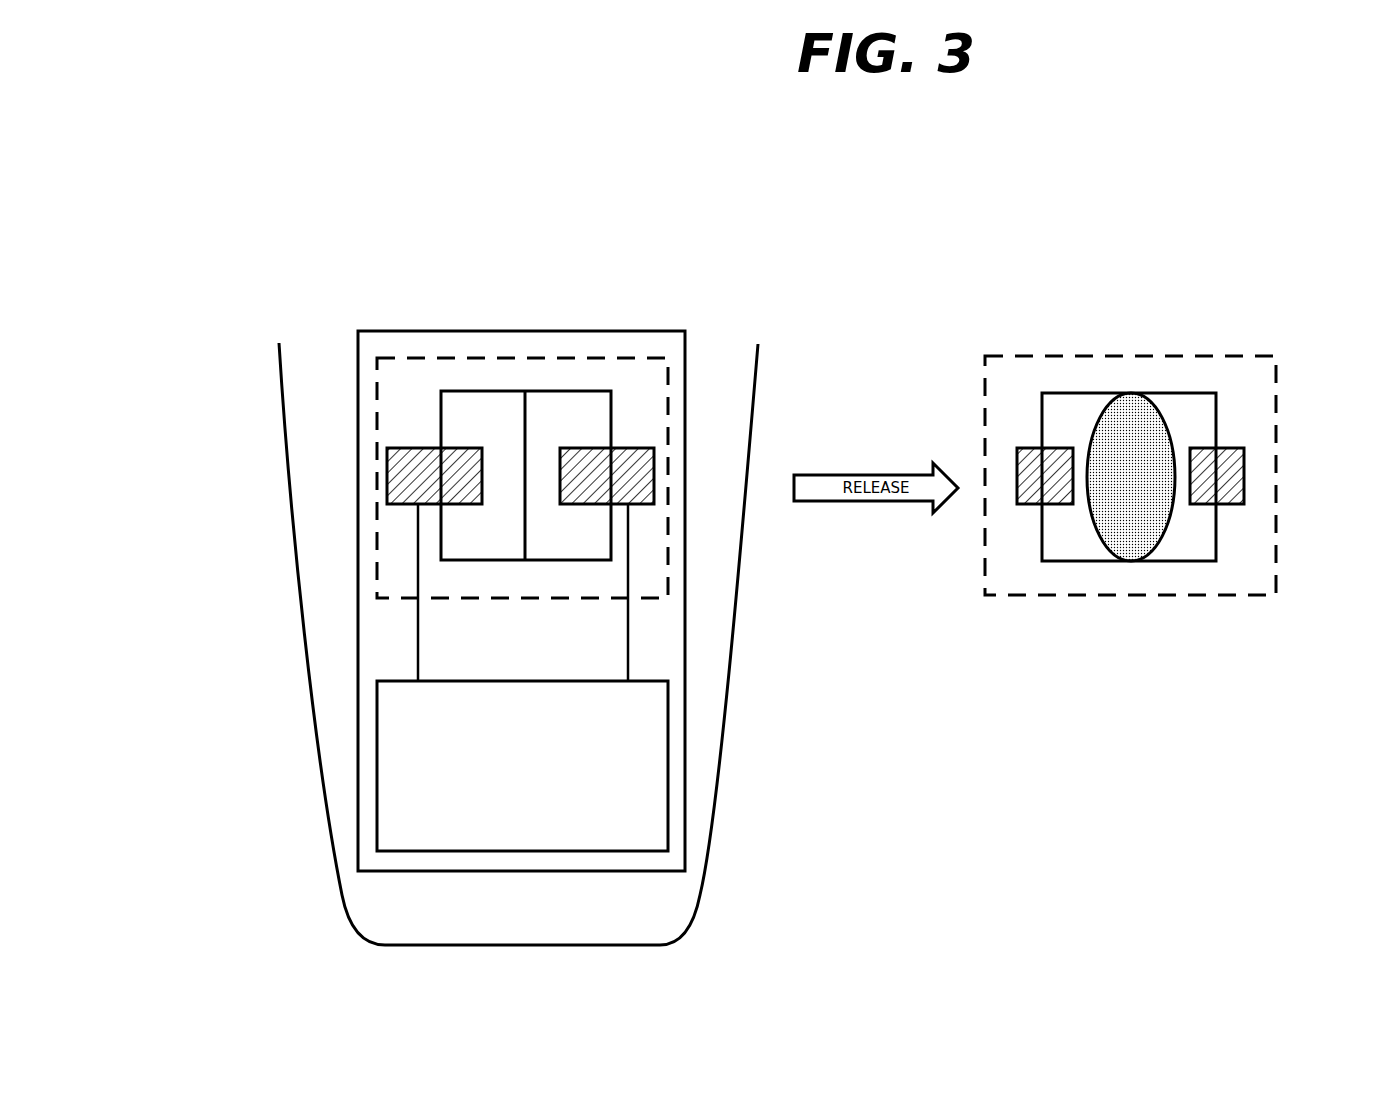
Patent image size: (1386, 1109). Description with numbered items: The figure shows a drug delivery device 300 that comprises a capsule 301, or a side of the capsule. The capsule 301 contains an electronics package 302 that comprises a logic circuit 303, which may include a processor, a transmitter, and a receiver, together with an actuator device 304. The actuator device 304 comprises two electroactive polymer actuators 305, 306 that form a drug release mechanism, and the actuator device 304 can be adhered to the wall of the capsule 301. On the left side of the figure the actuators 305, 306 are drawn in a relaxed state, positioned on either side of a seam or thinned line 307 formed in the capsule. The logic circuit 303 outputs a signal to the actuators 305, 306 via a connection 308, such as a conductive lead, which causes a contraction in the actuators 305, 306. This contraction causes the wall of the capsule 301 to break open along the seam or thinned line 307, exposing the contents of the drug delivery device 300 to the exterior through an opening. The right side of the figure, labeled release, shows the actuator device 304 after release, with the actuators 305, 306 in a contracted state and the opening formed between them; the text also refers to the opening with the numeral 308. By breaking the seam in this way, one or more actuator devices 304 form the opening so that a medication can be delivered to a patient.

The drug delivery device 300 is at (294, 281).
The capsule 301 is at (758, 357).
The electronics package 302 is at (626, 331).
The logic circuit 303 is at (377, 726).
The actuator device 304 is at (580, 356).
The electroactive polymer actuator 305 is at (388, 475).
The electroactive polymer actuator 306 is at (655, 482).
The seam or thinned line 307 is at (525, 425).
The connection 308 is at (630, 632).